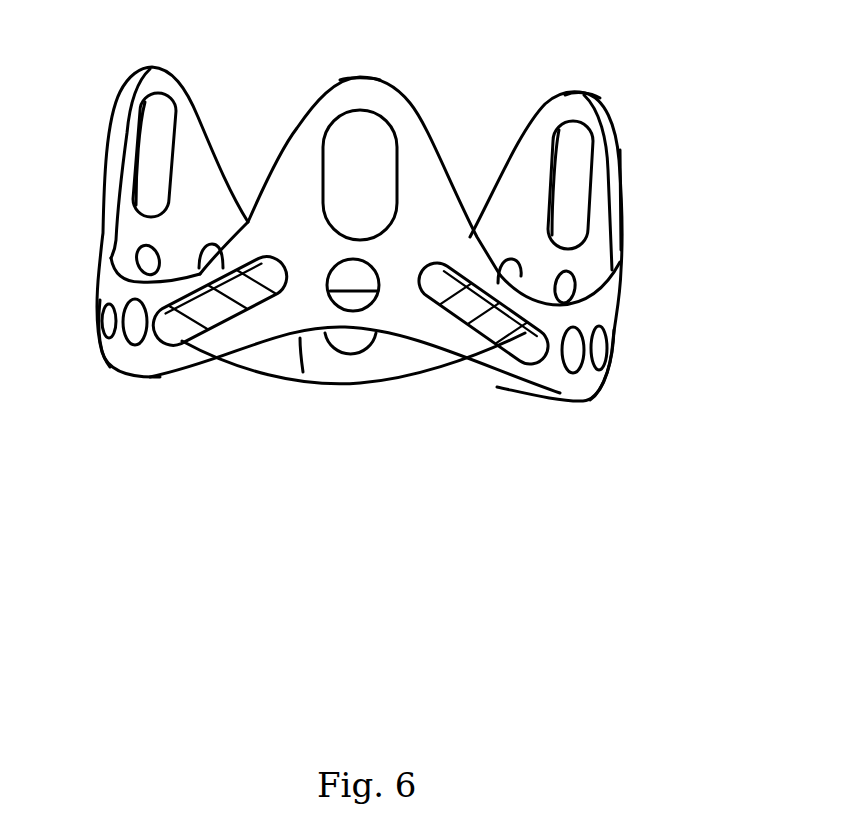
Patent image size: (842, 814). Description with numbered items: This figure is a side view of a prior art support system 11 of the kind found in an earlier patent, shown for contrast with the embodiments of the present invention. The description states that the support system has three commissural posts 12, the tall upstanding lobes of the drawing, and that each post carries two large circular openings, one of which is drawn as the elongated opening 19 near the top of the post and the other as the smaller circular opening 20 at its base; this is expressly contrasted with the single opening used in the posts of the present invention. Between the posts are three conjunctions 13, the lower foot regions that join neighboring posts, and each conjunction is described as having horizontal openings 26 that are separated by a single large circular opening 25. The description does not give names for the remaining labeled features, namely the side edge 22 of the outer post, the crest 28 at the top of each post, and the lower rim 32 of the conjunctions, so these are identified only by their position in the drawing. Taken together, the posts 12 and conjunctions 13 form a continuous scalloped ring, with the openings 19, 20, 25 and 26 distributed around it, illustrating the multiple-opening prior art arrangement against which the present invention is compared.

The plate body 11 is at (426, 348).
The lobe 12 is at (150, 68).
The foot 13 is at (122, 358).
The elongated slot 19 is at (153, 143).
The hole 20 is at (135, 243).
The side edge 22 is at (622, 200).
The hole 25 is at (362, 342).
The oblique opening 26 is at (112, 294).
The top edge 28 is at (368, 76).
The lower rim 32 is at (347, 383).